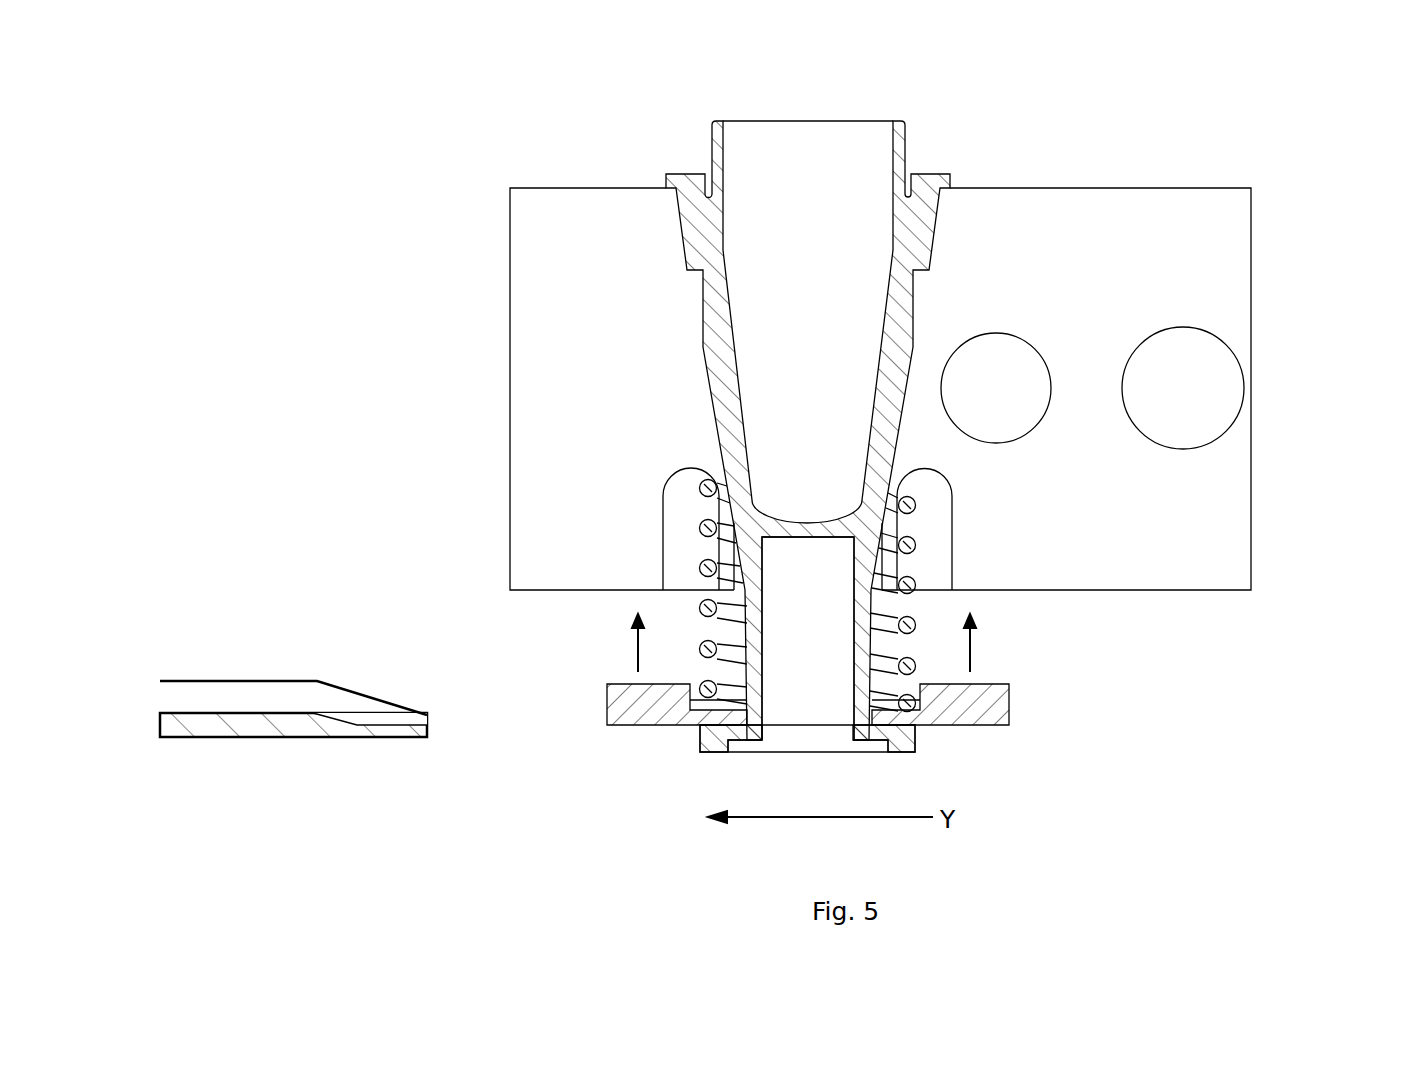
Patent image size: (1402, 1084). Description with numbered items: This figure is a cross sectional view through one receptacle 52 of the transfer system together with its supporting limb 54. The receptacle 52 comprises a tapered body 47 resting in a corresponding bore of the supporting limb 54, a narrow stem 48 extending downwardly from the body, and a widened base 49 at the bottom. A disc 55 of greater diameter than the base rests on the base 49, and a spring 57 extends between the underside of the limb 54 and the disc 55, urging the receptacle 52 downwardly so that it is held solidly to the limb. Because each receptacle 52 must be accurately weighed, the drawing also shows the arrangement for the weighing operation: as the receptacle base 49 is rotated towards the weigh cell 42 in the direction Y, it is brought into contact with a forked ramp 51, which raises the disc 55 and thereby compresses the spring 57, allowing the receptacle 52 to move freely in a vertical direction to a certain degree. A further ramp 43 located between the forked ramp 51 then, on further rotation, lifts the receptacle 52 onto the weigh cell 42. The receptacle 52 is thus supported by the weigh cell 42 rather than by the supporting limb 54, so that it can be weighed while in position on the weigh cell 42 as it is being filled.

The weigh cell 42 is at (181, 713).
The further ramp 43 is at (330, 712).
The tapered body 47 is at (936, 209).
The narrow stem 48 is at (763, 613).
The widened base 49 is at (918, 740).
The forked ramp 51 is at (363, 696).
The receptacle 52 is at (905, 133).
The supporting limb 54 is at (1251, 258).
The disc 55 is at (1009, 697).
The spring 57 is at (912, 616).